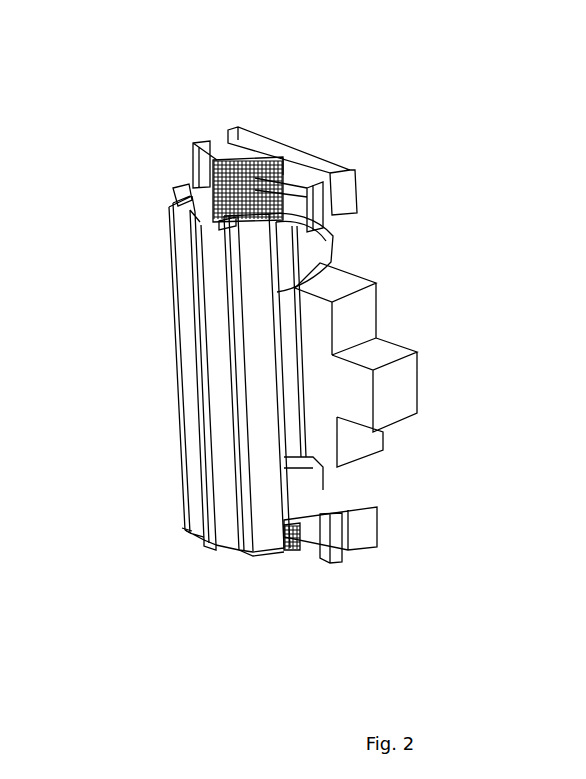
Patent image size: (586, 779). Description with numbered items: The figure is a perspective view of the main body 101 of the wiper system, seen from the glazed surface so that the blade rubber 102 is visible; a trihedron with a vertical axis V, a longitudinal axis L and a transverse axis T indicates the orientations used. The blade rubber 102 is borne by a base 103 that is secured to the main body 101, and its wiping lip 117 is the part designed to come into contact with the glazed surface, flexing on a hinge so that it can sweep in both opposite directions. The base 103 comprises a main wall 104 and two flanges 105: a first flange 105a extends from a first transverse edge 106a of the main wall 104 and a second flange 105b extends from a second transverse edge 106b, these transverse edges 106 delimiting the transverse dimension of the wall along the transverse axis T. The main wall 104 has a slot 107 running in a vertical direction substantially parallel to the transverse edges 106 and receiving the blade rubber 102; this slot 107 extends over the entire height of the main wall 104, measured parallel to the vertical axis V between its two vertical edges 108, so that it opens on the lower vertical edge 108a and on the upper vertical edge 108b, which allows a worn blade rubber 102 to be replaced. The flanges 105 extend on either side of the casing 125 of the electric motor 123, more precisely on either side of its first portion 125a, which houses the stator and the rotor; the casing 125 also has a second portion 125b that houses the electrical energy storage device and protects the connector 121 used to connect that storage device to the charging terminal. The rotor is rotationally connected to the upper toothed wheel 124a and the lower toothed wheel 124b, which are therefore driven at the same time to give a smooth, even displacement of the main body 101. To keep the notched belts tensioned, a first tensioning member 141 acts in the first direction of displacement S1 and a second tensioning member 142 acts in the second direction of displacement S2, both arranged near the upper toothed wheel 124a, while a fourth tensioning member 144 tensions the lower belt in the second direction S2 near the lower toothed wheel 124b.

The main body 101 is at (170, 78).
The blade rubber 102 is at (113, 364).
The wiping lip 117 is at (171, 254).
The base 103 is at (182, 358).
The main wall 104 is at (205, 426).
The flanges 105 is at (210, 415).
The first flange 105a is at (183, 186).
The second flange 105b is at (272, 552).
The transverse edges 106 is at (173, 574).
The first transverse edge 106a is at (187, 513).
The second transverse edge 106b is at (245, 553).
The slot 107 is at (207, 549).
The vertical edges 108 is at (113, 395).
The lower vertical edge 108a is at (194, 537).
The upper vertical edge 108b is at (172, 197).
The connector 121 is at (407, 385).
The electric motor 123 is at (426, 365).
The upper toothed wheel 124a is at (196, 151).
The lower toothed wheel 124b is at (292, 552).
The casing 125 is at (398, 351).
The first portion of the casing 125a is at (315, 239).
The second portion of the casing 125b is at (380, 298).
The first tensioning member 141 is at (243, 113).
The second tensioning member 142 is at (327, 142).
The fourth tensioning member 144 is at (391, 530).
The first direction of displacement S1 is at (202, 132).
The second direction of displacement S2 is at (360, 195).
The vertical axis V is at (457, 168).
The longitudinal axis L is at (457, 168).
The transverse axis T is at (457, 168).